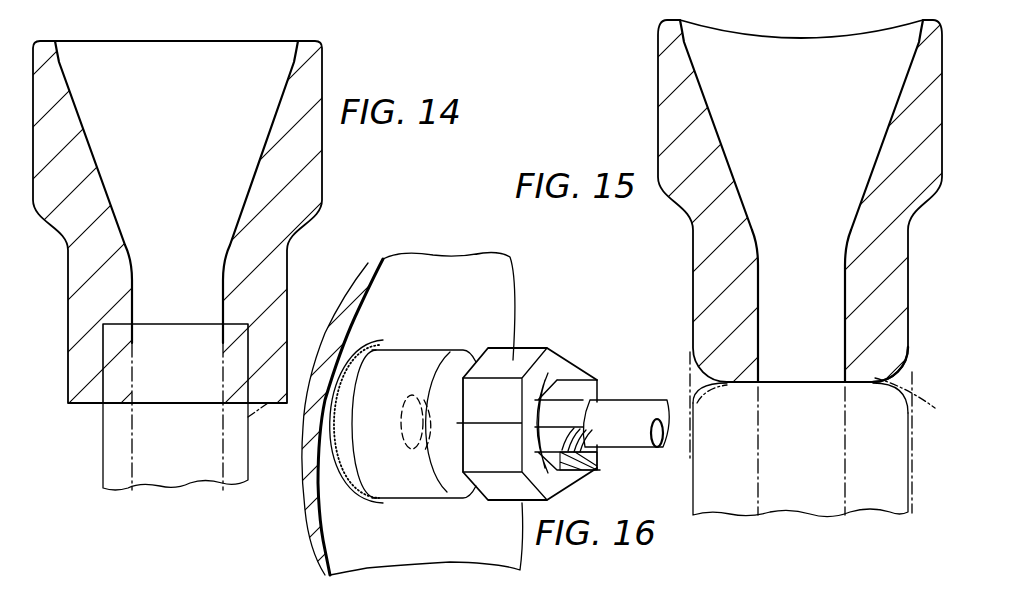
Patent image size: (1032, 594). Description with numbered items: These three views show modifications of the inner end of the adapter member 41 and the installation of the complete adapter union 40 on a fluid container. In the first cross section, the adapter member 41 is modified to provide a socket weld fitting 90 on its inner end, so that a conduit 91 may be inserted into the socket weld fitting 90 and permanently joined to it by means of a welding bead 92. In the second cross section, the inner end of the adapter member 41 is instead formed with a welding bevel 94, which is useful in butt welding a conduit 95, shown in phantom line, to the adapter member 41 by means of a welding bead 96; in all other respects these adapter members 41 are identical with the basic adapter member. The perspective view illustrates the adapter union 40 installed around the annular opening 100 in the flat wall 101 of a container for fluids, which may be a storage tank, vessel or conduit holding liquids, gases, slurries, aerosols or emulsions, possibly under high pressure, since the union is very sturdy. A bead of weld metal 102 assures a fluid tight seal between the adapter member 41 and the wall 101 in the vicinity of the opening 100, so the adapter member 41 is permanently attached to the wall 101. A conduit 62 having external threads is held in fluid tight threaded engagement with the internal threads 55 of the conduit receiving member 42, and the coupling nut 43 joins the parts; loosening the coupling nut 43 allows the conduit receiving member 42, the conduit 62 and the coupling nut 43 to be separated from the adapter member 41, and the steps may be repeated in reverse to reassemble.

In FIG. 16, the adapter union 40 is at (500, 385).
In FIG. 14, the adapter member 41 is at (322, 78).
In FIG. 15, the adapter member 41 is at (658, 120).
In FIG. 16, the adapter member 41 is at (403, 357).
In FIG. 16, the conduit receiving member 42 is at (575, 387).
In FIG. 16, the coupling nut 43 is at (525, 360).
In FIG. 16, the internal threads 55 is at (577, 463).
In FIG. 16, the conduit 62 is at (628, 437).
In FIG. 14, the socket weld fitting 90 is at (103, 357).
In FIG. 14, the conduit 91 is at (100, 476).
In FIG. 14, the welding bead 92 is at (102, 403).
In FIG. 15, the welding bevel 94 is at (907, 360).
In FIG. 15, the conduit 95 is at (908, 433).
In FIG. 15, the welding bead 96 is at (914, 409).
In FIG. 16, the annular opening 100 is at (398, 423).
In FIG. 16, the flat wall 101 is at (434, 538).
In FIG. 16, the bead of weld metal 102 is at (372, 348).